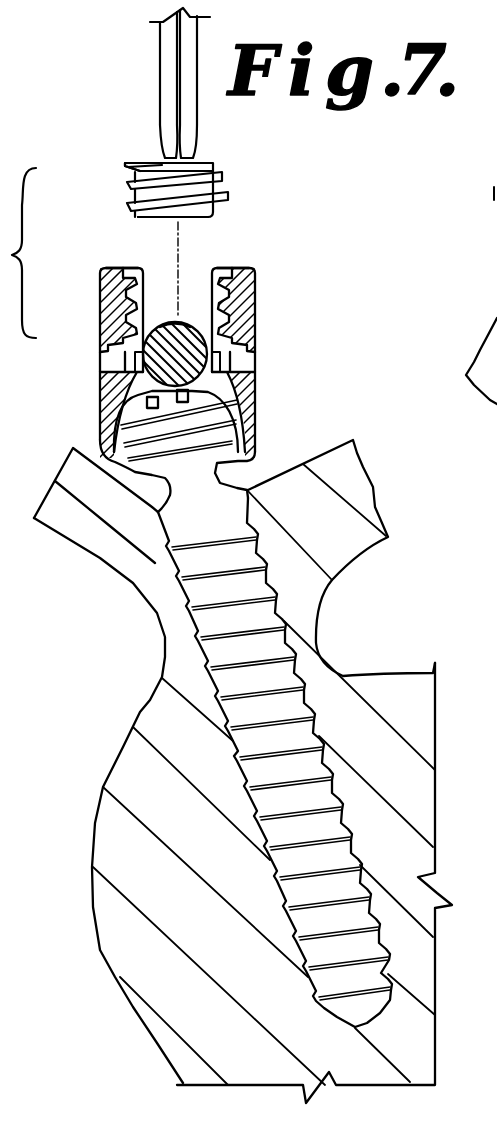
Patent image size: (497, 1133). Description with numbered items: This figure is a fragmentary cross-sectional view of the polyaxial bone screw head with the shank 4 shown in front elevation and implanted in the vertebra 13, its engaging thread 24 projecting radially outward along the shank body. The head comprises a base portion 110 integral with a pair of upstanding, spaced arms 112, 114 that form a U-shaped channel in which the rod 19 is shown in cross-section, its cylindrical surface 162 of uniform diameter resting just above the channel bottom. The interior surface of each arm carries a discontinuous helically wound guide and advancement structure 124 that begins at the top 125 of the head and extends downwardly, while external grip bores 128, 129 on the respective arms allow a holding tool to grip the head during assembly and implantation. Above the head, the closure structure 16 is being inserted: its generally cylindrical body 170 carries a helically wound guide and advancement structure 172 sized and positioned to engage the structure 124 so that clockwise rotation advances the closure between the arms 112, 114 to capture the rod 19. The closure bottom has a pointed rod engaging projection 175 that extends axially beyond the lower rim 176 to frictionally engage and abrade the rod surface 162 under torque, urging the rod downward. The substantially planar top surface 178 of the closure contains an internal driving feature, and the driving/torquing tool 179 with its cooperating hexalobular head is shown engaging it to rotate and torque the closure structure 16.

The shank 4 is at (256, 708).
The vertebra 13 is at (129, 758).
The closure structure 16 is at (226, 172).
The rod 19 is at (195, 333).
The engaging thread 24 is at (343, 808).
The base portion 110 is at (103, 422).
The arm 112 is at (102, 317).
The arm 114 is at (253, 313).
The guide and advancement structure 124 is at (147, 295).
The top 125 is at (240, 270).
The grip bore 128 is at (110, 353).
The grip bore 129 is at (238, 357).
The cylindrical surface 162 is at (178, 318).
The body 170 is at (127, 183).
The guide and advancement structure 172 is at (229, 193).
The rod engaging projection 175 is at (185, 220).
The lower rim 176 is at (147, 220).
The top surface 178 is at (208, 158).
The driving/torquing tool 179 is at (158, 58).